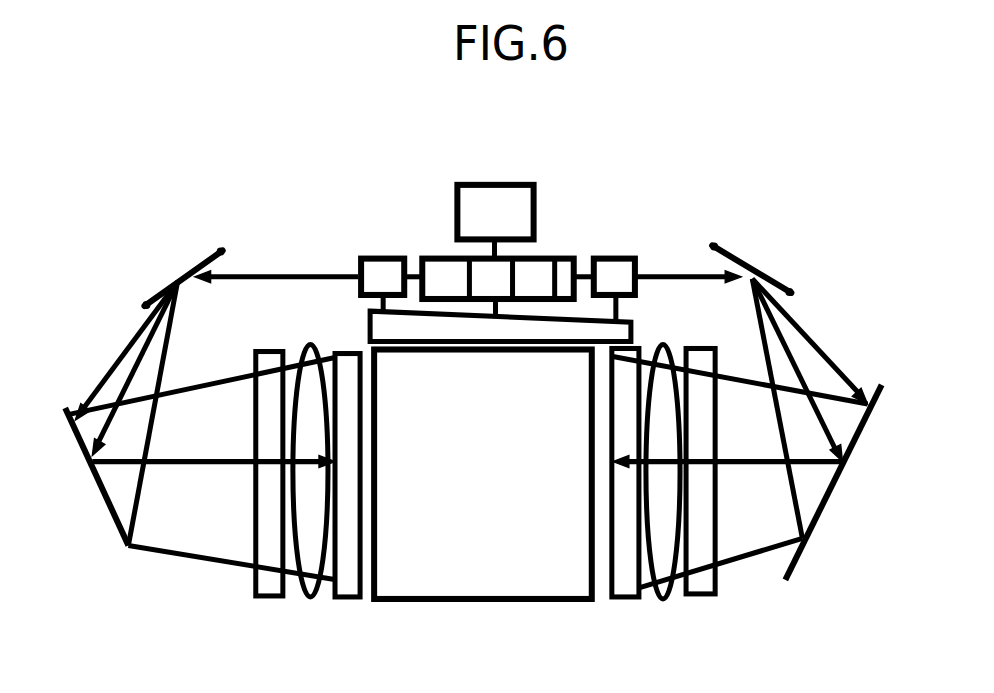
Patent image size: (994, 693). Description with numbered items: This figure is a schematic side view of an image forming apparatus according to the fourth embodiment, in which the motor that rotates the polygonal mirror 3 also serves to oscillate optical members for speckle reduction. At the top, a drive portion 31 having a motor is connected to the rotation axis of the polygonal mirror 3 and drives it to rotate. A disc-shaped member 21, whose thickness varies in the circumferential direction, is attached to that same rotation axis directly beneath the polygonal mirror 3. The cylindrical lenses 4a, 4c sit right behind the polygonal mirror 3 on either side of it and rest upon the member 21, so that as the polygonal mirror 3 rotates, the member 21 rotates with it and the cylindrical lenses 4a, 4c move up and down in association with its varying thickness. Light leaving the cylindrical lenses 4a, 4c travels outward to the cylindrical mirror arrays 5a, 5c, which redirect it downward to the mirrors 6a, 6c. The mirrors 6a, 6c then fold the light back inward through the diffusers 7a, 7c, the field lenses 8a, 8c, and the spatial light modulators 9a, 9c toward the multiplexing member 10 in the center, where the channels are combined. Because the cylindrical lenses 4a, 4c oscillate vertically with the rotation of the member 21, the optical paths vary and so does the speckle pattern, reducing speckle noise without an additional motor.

The drive portion 31 is at (494, 187).
The polygonal mirror 3 is at (571, 258).
The cylindrical lens 4a is at (392, 275).
The cylindrical lens 4c is at (622, 260).
The disc-shaped member 21 is at (370, 312).
The cylindrical mirror array 5a is at (183, 280).
The cylindrical mirror array 5c is at (751, 264).
The mirror 6a is at (95, 485).
The mirror 6c is at (863, 433).
The diffuser 7a is at (259, 598).
The field lens 8a is at (305, 598).
The spatial light modulator 9a is at (349, 598).
The multiplexing member 10 is at (465, 575).
The spatial light modulator 9c is at (612, 598).
The field lens 8c is at (662, 598).
The diffuser 7c is at (716, 598).